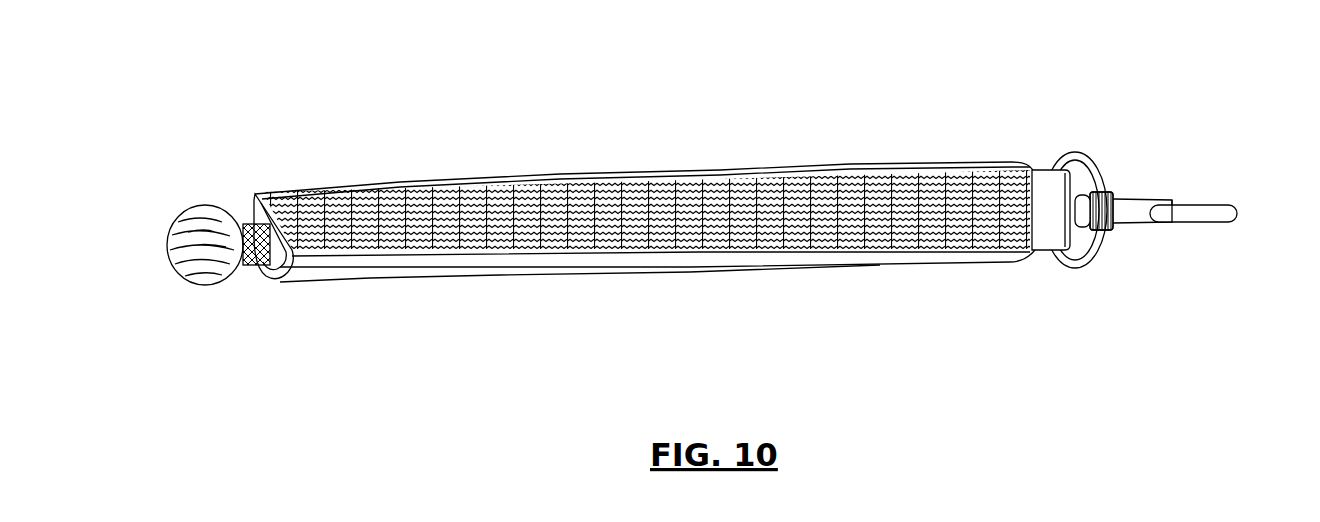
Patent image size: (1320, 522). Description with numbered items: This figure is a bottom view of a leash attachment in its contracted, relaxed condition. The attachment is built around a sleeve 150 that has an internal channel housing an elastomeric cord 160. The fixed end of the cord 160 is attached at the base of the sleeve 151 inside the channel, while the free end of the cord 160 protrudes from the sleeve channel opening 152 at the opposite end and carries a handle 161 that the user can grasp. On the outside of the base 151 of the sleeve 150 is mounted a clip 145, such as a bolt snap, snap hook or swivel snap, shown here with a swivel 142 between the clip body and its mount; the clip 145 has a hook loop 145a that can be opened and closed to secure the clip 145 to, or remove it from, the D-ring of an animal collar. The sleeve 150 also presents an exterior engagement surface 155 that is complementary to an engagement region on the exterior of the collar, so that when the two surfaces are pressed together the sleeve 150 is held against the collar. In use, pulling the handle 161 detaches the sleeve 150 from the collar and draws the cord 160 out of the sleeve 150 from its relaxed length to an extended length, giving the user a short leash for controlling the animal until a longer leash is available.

The swivel 142 is at (1090, 233).
The clip 145 is at (1071, 153).
The hook loop 145a is at (1182, 213).
The sleeve 150 is at (347, 272).
The base of the sleeve 151 is at (1048, 195).
The sleeve channel opening 152 is at (257, 185).
The exterior engagement surface 155 is at (573, 237).
The elastomeric cord 160 is at (268, 268).
The handle 161 is at (198, 262).